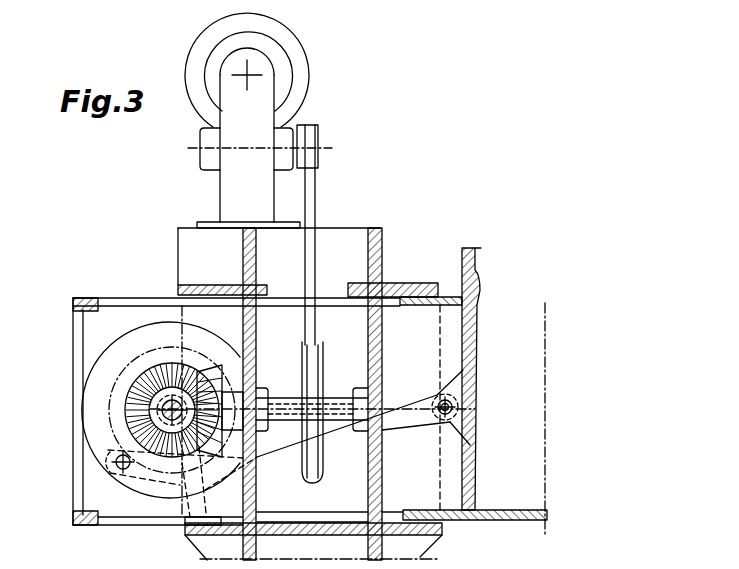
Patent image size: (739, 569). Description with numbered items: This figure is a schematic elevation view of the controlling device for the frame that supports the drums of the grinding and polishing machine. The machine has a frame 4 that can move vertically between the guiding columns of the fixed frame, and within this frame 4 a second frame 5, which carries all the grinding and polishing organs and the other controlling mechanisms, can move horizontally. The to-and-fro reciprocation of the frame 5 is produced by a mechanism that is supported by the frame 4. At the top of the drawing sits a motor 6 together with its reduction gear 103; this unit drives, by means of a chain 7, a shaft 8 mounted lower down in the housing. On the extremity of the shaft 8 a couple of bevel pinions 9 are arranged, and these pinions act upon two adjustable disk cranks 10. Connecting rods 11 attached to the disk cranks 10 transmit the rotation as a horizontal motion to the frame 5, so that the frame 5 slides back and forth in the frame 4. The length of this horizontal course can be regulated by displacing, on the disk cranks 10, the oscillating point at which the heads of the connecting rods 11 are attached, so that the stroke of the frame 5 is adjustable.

The frame 4 is at (240, 535).
The frame 5 is at (476, 333).
The motor 6 is at (293, 45).
The chain 7 is at (307, 197).
The shaft 8 is at (280, 407).
The bevel pinions 9 is at (125, 405).
The adjustable disk cranks 10 is at (95, 385).
The connecting rods 11 is at (404, 420).
The reduction gear 103 is at (228, 80).